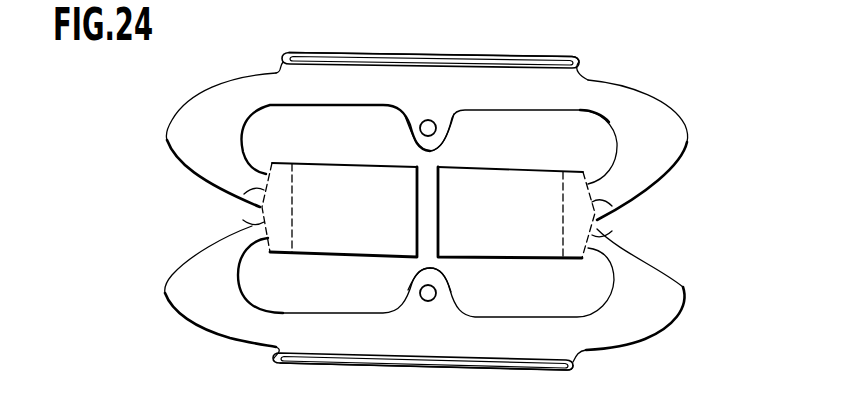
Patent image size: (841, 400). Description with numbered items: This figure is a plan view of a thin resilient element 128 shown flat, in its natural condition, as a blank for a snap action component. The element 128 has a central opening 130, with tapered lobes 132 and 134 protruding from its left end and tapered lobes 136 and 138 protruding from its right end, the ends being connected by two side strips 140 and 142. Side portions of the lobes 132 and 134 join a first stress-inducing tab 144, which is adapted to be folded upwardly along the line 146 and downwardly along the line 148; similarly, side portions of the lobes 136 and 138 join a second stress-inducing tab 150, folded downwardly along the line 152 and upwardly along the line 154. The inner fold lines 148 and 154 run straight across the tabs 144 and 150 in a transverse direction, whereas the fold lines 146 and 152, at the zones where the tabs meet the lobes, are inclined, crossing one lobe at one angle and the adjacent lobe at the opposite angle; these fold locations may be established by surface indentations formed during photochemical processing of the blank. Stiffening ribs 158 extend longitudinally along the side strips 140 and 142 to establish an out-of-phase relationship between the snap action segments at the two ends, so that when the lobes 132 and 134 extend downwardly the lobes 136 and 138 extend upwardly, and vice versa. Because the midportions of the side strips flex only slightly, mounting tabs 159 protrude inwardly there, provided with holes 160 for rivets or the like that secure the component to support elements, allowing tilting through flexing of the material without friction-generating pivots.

The thin resilient element 128 is at (521, 80).
The central opening 130 is at (568, 127).
The tapered lobe 132 is at (178, 132).
The tapered lobe 134 is at (187, 303).
The tapered lobe 136 is at (673, 137).
The tapered lobe 138 is at (657, 278).
The side strip 140 is at (358, 77).
The side strip 142 is at (378, 338).
The first stress-inducing tab 144 is at (330, 257).
The fold line 146 is at (262, 197).
The fold line 148 is at (292, 206).
The second stress-inducing tab 150 is at (523, 260).
The fold line 152 is at (594, 212).
The fold line 154 is at (563, 226).
The stiffening rib 158 is at (463, 62).
The mounting tab 159 is at (451, 140).
The hole 160 is at (434, 124).